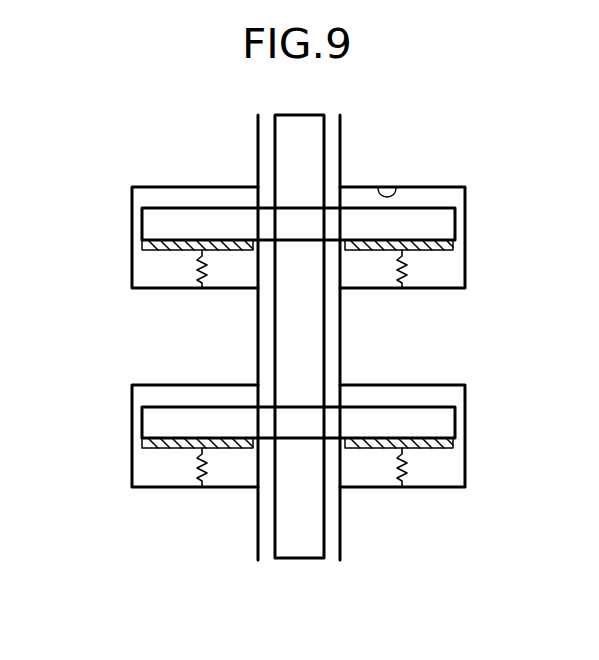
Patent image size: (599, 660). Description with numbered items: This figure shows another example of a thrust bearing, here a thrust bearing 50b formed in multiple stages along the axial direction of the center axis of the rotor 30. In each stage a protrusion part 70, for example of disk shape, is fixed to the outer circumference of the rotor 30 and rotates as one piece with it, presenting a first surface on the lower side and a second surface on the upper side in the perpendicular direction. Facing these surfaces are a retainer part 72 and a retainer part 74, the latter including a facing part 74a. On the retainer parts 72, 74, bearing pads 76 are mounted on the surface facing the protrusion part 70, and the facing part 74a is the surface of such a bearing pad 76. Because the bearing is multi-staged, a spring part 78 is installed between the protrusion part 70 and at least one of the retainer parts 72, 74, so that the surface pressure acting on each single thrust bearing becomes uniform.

The rotor 30 is at (300, 548).
The thrust bearing 50b is at (110, 176).
The protrusion part 70 is at (446, 228).
The retainer part 72 is at (163, 282).
The retainer part 74 is at (444, 180).
The facing part 74a is at (390, 190).
The bearing pad 76 is at (165, 248).
The spring part 78 is at (208, 272).